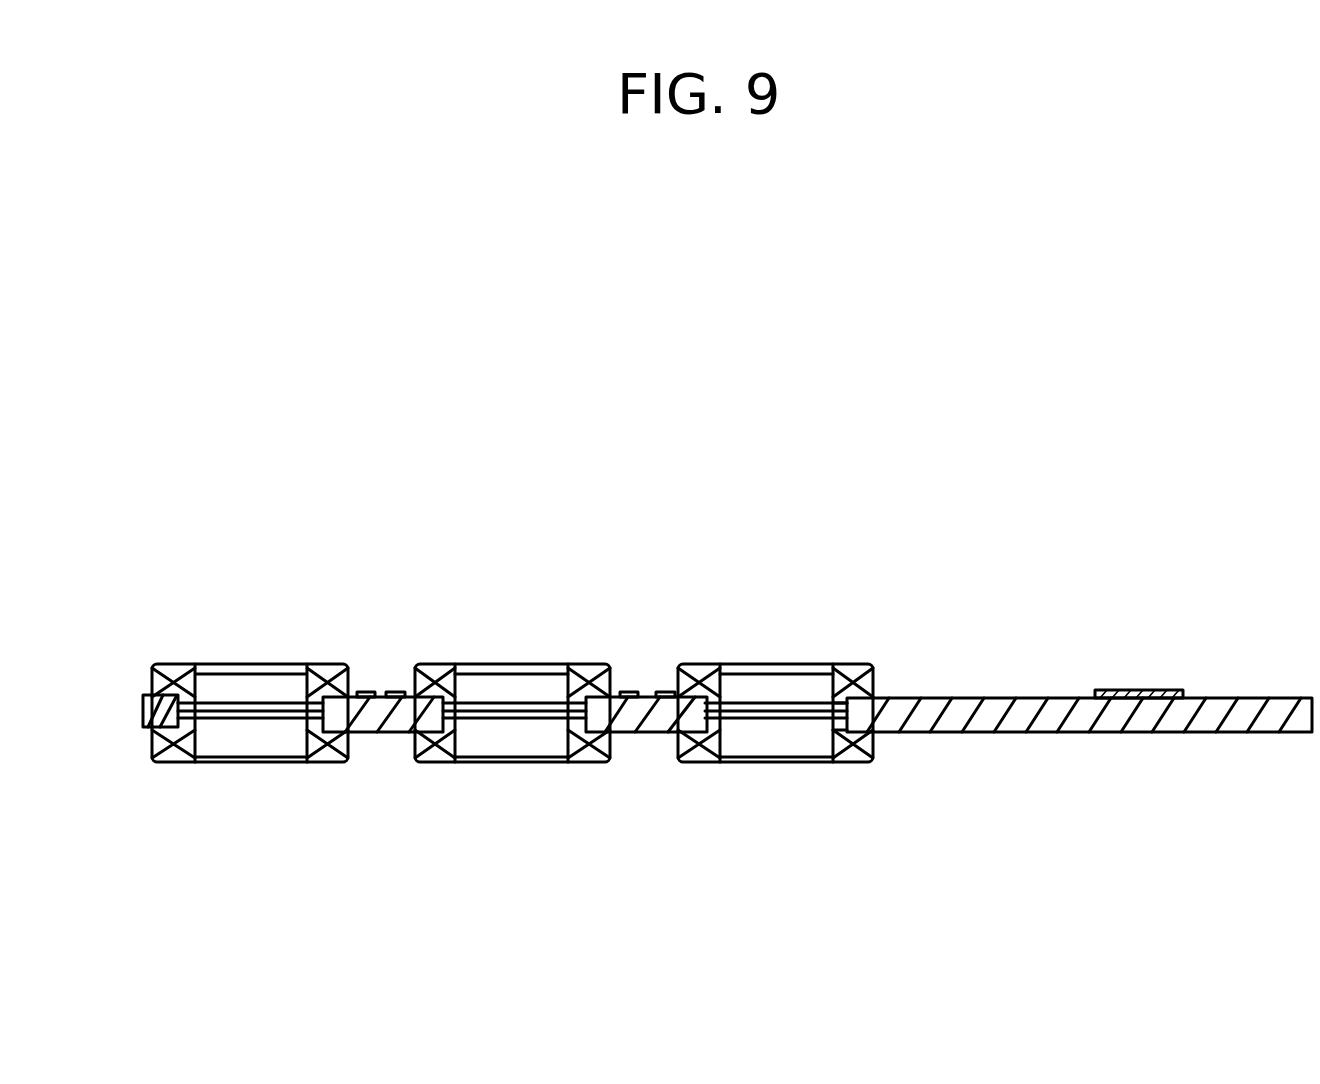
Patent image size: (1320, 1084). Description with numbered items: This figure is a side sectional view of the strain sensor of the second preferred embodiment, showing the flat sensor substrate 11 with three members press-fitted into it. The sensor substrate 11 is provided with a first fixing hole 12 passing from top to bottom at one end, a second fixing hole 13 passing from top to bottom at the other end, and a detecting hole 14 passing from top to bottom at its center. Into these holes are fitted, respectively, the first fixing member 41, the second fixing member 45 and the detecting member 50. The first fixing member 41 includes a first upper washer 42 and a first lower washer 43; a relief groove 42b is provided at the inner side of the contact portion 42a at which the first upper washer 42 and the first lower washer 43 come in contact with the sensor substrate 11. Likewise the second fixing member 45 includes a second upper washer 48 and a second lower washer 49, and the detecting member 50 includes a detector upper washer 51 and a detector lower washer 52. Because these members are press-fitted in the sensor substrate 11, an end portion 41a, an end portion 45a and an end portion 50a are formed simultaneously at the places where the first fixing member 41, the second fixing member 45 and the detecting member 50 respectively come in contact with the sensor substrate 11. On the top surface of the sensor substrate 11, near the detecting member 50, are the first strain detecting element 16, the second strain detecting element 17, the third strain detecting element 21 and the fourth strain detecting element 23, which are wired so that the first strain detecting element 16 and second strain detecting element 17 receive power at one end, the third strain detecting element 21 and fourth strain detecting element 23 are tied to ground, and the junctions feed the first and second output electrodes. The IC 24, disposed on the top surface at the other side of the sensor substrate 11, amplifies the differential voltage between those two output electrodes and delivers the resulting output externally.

The sensor substrate 11 is at (975, 733).
The first fixing hole 12 is at (315, 722).
The second fixing hole 13 is at (835, 745).
The detecting hole 14 is at (443, 735).
The first strain detecting element 16 is at (680, 676).
The second strain detecting element 17 is at (408, 735).
The third strain detecting element 21 is at (365, 692).
The fourth strain detecting element 23 is at (630, 733).
The IC 24 is at (1145, 692).
The first fixing member 41 is at (307, 697).
The end portion 41a is at (350, 732).
The first upper washer 42 is at (172, 665).
The contact portion 42a is at (152, 665).
The relief groove 42b is at (200, 665).
The first lower washer 43 is at (174, 745).
The second fixing member 45 is at (880, 667).
The end portion 45a is at (682, 740).
The second upper washer 48 is at (870, 665).
The second lower washer 49 is at (857, 755).
The detecting member 50 is at (582, 665).
The end portion 50a is at (405, 692).
The detector upper washer 51 is at (617, 692).
The detector lower washer 52 is at (587, 730).